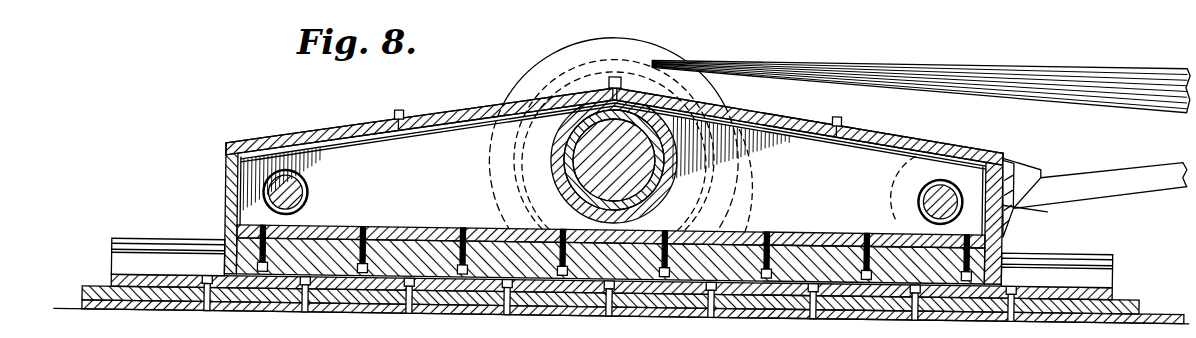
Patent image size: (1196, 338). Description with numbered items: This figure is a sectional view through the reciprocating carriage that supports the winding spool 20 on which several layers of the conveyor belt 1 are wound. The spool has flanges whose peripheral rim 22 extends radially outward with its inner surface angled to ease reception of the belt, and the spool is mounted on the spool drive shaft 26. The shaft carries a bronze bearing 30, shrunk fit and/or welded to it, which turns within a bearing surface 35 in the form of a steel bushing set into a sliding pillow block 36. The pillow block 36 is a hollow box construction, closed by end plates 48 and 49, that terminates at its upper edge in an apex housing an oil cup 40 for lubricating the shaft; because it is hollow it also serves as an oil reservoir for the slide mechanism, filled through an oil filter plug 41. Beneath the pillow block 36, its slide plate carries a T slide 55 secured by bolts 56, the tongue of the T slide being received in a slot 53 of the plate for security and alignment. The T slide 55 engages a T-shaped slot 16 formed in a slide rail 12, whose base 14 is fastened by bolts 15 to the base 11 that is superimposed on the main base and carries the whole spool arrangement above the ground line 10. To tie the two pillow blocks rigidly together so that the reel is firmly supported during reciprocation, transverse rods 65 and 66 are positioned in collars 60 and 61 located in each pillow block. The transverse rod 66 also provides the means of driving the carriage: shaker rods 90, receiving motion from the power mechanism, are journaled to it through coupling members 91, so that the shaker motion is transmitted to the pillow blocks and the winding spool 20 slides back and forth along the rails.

The conveyor belt 1 is at (1027, 70).
The ground line 10 is at (1150, 316).
The base 11 is at (1138, 292).
The slide rail 12 is at (1113, 267).
The base of slide rail 14 is at (990, 294).
The bolt 15 is at (614, 300).
The T-shaped slot 16 is at (160, 252).
The winding spool 20 is at (589, 38).
The peripheral rim 22 is at (529, 67).
The spool drive shaft 26 is at (668, 134).
The bronze bearing 30 is at (575, 182).
The bearing surface 35 is at (554, 137).
The sliding pillow block 36 is at (219, 172).
The oil cup 40 is at (617, 78).
The oil filter plug 41 is at (398, 112).
The end plate 48 is at (225, 207).
The end plate 49 is at (1018, 215).
The slot 53 is at (742, 228).
The T slide 55 is at (790, 290).
The bolt 56 is at (367, 230).
The collar 60 is at (303, 186).
The collar 61 is at (927, 178).
The transverse rod 65 is at (306, 204).
The transverse rod 66 is at (918, 198).
The shaker rod 90 is at (1118, 168).
The coupling member 91 is at (1030, 160).